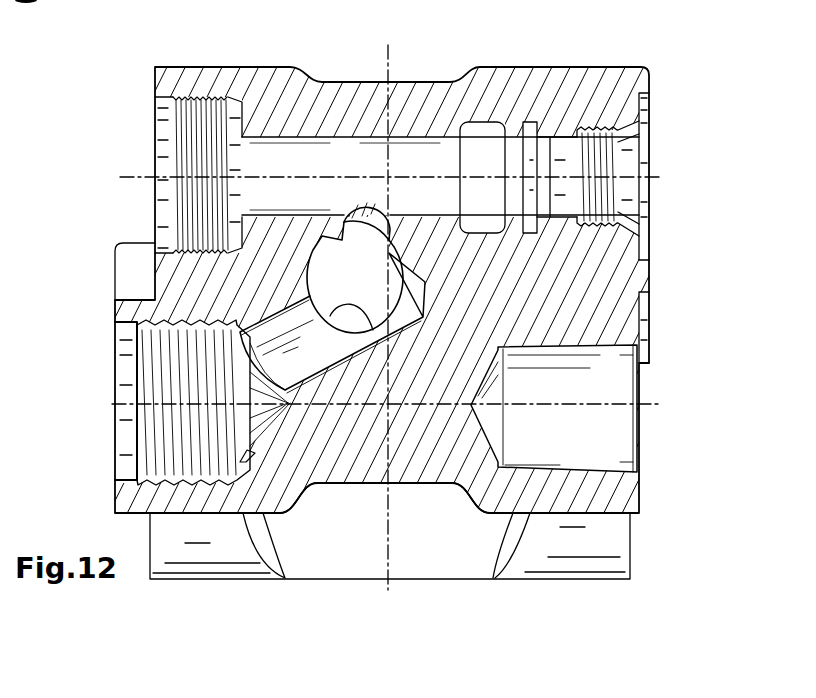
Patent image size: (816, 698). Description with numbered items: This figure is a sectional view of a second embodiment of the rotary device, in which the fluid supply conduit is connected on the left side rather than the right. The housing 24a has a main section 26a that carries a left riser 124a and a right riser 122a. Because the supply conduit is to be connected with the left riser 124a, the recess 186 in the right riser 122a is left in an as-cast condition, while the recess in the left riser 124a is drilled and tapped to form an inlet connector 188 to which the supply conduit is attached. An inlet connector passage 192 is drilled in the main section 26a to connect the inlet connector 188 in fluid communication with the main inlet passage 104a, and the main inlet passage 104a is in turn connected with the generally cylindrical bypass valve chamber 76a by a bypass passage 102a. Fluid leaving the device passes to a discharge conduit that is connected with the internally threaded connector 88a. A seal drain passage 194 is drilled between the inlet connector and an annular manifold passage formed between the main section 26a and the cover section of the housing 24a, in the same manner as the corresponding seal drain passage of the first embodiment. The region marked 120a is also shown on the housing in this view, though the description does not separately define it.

The housing 24a is at (208, 64).
The main section 26a is at (397, 66).
The bypass valve chamber 76a is at (327, 165).
The bypass passage 102a is at (392, 208).
The internally threaded connector 88a is at (605, 155).
The main inlet passage 104a is at (330, 264).
The inlet connector passage 192 is at (290, 320).
The inlet connector 188 is at (177, 383).
The left riser 124a is at (108, 516).
The recess 186 is at (615, 375).
The right riser 122a is at (613, 491).
The recess 120a is at (440, 492).
The seal drain passage 194 is at (247, 462).